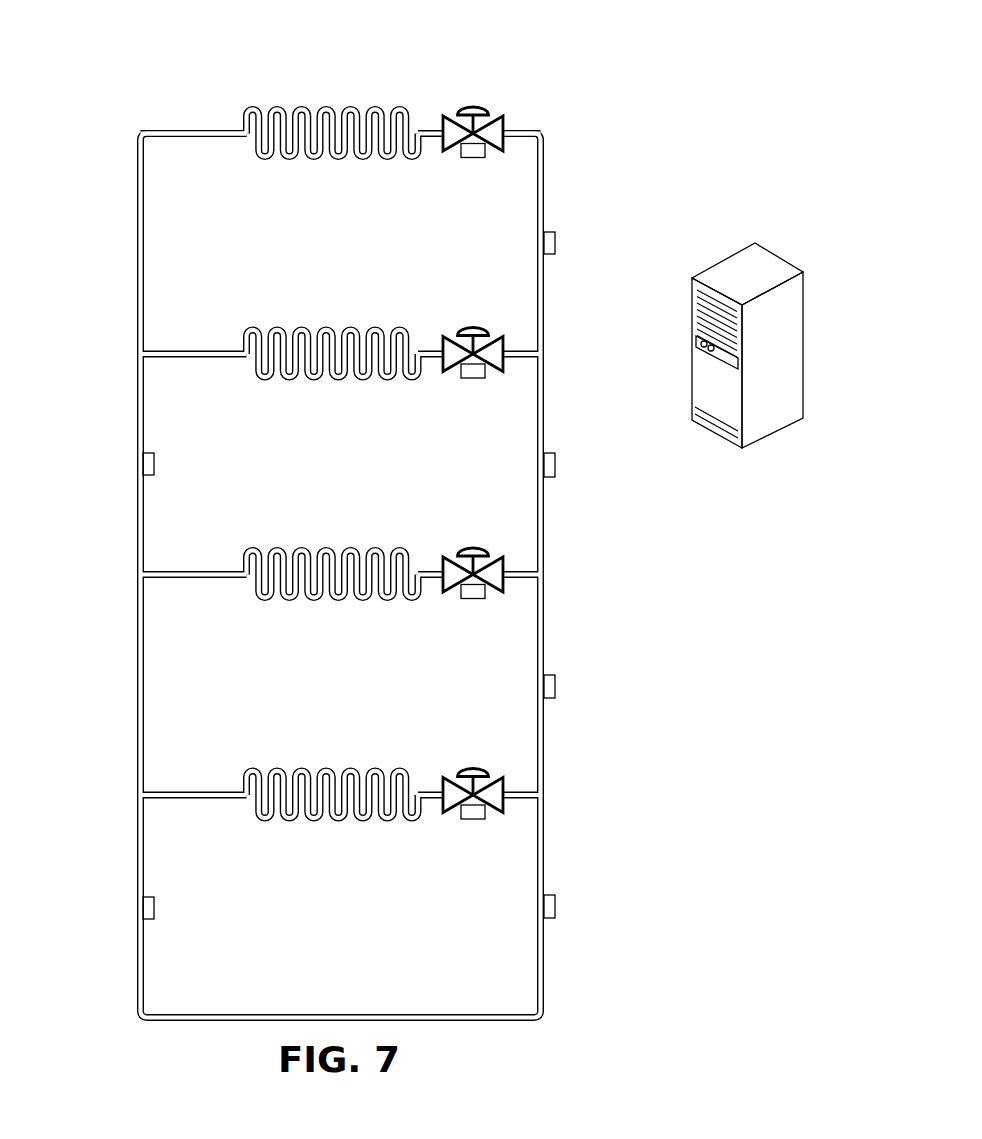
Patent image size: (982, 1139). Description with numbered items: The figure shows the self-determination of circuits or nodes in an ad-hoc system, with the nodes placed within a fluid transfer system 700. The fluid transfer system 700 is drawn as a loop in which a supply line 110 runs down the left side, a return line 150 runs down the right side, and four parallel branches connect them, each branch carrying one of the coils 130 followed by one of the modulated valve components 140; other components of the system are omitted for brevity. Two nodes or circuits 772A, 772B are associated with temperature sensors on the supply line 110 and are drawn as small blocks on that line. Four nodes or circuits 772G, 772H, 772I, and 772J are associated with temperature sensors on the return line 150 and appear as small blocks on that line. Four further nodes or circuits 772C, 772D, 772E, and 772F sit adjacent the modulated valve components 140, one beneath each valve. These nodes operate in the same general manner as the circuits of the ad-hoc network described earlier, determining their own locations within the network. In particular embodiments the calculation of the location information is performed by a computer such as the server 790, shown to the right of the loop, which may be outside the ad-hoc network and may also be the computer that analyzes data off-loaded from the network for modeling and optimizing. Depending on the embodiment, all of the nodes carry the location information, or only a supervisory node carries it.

The supply line 110 is at (137, 245).
The coils 130 is at (296, 95).
The modulated valve components 140 is at (479, 96).
The return line 150 is at (543, 172).
The fluid transfer system 700 is at (702, 824).
The node or circuit 772A is at (157, 908).
The node or circuit 772B is at (157, 465).
The node or circuit 772C is at (478, 158).
The node or circuit 772D is at (478, 378).
The node or circuit 772E is at (478, 598).
The node or circuit 772F is at (478, 819).
The node or circuit 772G is at (557, 245).
The node or circuit 772H is at (557, 465).
The node or circuit 772I is at (558, 686).
The node or circuit 772J is at (558, 905).
The server 790 is at (775, 256).